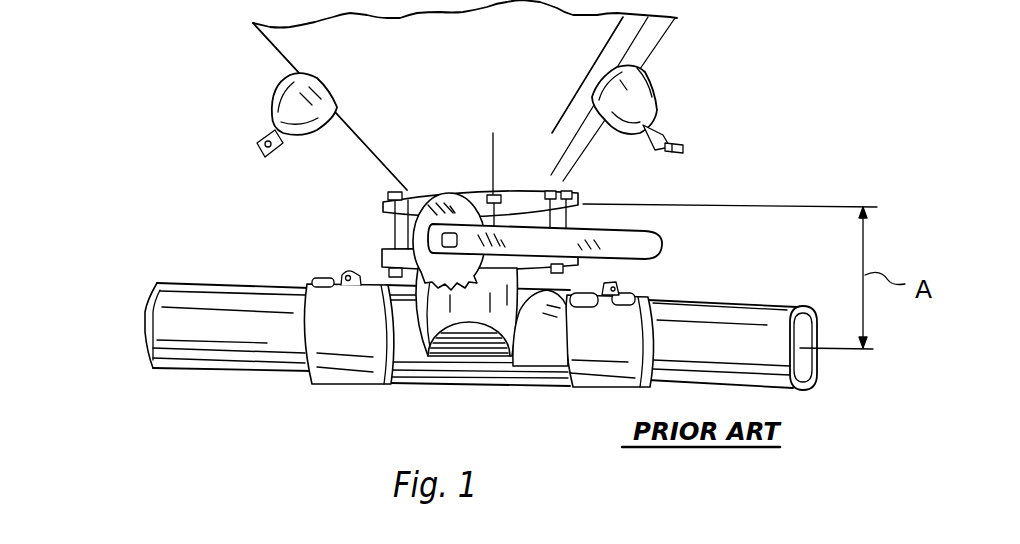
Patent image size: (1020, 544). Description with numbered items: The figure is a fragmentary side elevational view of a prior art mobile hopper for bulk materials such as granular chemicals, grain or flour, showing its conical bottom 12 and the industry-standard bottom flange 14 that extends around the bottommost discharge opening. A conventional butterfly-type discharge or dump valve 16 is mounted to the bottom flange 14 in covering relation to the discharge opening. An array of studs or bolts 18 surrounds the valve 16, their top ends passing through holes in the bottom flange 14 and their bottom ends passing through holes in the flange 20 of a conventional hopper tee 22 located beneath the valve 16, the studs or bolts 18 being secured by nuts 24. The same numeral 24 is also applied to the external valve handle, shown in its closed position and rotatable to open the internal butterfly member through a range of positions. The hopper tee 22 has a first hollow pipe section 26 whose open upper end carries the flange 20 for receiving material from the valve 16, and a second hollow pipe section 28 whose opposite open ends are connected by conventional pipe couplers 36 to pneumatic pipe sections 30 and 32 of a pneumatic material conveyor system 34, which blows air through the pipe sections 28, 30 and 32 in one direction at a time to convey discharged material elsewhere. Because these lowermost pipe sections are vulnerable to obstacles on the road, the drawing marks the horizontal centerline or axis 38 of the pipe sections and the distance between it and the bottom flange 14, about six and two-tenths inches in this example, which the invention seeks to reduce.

The conical bottom 12 is at (402, 190).
The bottom flange 14 is at (383, 202).
The discharge or dump valve 16 is at (664, 236).
The studs or bolts 18 is at (397, 188).
The flange 20 is at (382, 249).
The hopper tee 22 is at (411, 378).
The nuts 24 is at (427, 188).
The first hollow pipe section 26 is at (541, 375).
The second hollow pipe section 28 is at (460, 378).
The pneumatic pipe section 30 is at (207, 372).
The pneumatic pipe section 32 is at (792, 390).
The pneumatic material conveyor system 34 is at (153, 367).
The couplings 36 is at (313, 381).
The horizontal centerline or axis 38 is at (870, 350).